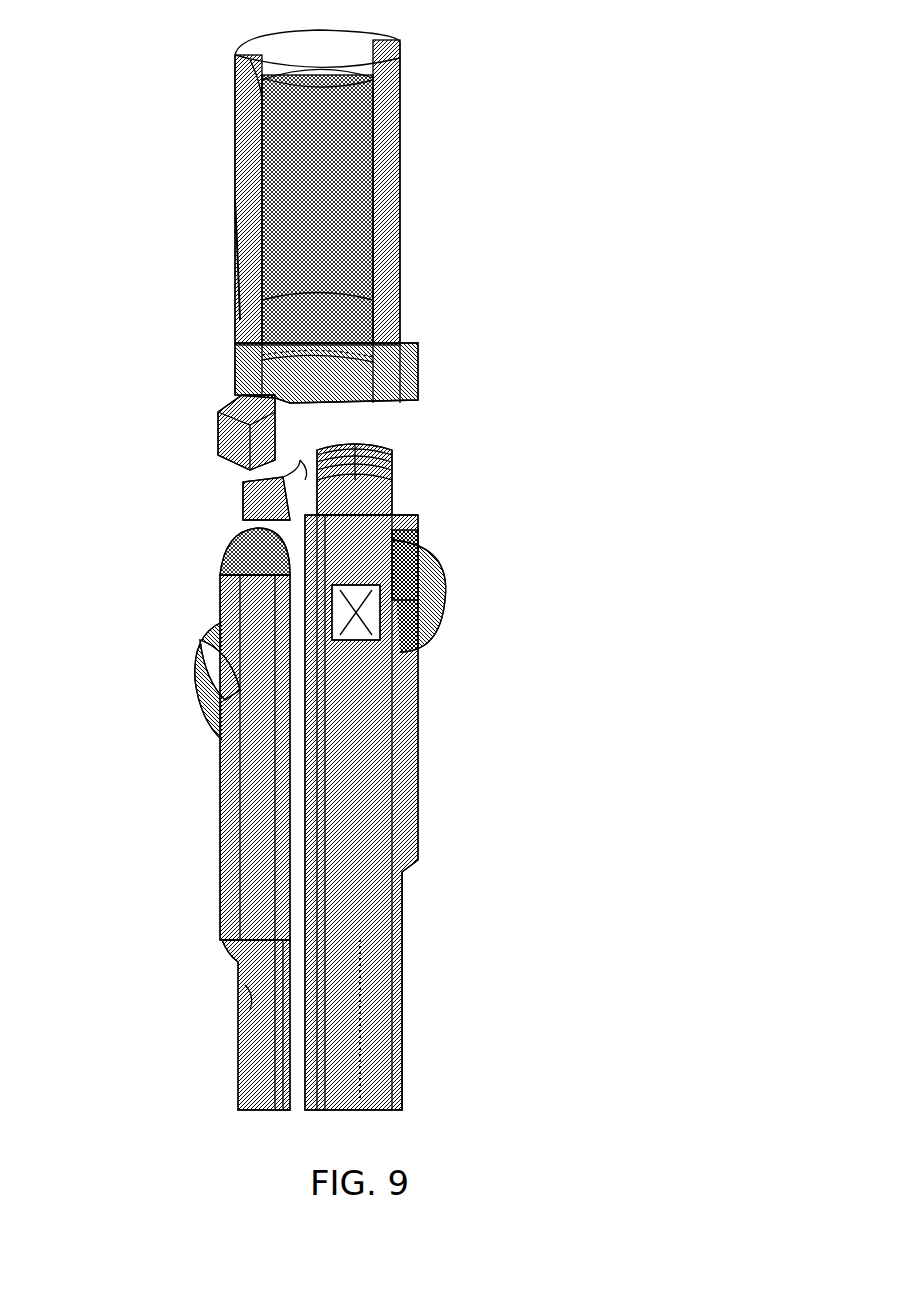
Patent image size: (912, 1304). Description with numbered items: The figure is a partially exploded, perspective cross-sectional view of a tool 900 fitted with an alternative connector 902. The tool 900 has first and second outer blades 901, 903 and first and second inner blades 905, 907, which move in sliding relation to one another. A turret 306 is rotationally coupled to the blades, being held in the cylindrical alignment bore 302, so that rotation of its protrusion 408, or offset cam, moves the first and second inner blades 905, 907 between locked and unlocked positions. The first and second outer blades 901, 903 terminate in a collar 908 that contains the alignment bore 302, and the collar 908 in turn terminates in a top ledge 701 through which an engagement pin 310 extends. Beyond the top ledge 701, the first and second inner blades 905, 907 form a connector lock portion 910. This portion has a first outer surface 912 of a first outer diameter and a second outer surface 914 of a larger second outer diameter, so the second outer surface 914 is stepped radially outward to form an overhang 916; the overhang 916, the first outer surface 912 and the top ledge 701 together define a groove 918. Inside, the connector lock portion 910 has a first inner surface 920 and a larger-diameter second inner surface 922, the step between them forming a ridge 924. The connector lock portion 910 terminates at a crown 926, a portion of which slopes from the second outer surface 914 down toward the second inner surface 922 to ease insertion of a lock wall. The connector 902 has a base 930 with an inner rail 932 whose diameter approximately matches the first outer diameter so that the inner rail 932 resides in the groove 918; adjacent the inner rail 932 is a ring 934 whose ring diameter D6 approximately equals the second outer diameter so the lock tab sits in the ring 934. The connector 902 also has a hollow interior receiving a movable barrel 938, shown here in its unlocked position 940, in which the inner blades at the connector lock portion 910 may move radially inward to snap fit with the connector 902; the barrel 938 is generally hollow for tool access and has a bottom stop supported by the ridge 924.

The tool 900 is at (540, 112).
The unlocked position 940 is at (196, 265).
The movable barrel 938 is at (405, 178).
The connector 902 is at (387, 187).
The ring 934 is at (405, 290).
The ring diameter D6 is at (412, 340).
The base 930 is at (435, 345).
The inner rail 932 is at (215, 410).
The crown 926 is at (345, 447).
The second inner surface 922 is at (350, 440).
The ridge 924 is at (355, 452).
The second outer surface 914 is at (382, 455).
The overhang 916 is at (395, 470).
The connector lock portion 910 is at (317, 733).
The first outer surface 912 is at (400, 500).
The engagement pin 310 is at (422, 545).
The first inner surface 920 is at (298, 462).
The groove 918 is at (236, 535).
The top ledge 701 is at (232, 550).
The collar 908 is at (220, 592).
The turret 306 is at (418, 635).
The alignment bore 302 is at (175, 782).
The protrusion 408 is at (382, 645).
The first inner blade 905 is at (404, 903).
The first outer blade 901 is at (404, 957).
The second inner blade 907 is at (240, 1014).
The second outer blade 903 is at (240, 1042).